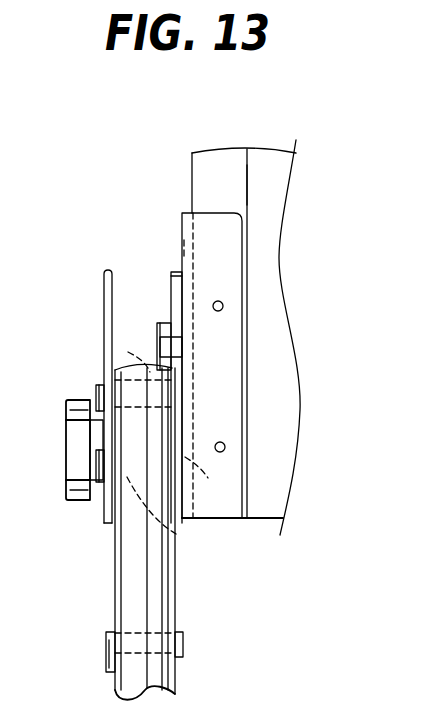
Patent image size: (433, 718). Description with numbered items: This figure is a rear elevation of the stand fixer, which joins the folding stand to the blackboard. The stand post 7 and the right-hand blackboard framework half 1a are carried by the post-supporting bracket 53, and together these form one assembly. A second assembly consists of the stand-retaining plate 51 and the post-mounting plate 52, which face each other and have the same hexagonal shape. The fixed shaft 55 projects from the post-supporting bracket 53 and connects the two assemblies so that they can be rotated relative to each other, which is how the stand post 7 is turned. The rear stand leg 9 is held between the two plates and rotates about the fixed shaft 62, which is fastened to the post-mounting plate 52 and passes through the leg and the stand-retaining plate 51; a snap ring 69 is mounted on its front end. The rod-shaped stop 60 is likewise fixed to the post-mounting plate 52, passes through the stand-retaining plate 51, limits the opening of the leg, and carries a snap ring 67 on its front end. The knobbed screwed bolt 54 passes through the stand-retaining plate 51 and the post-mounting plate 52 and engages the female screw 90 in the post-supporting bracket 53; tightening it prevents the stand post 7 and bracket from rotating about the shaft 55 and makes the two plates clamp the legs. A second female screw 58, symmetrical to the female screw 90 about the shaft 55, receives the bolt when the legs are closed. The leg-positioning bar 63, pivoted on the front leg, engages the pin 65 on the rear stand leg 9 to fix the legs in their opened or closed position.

The stand post 7 is at (220, 152).
The right-hand blackboard framework half 1a is at (262, 207).
The post-supporting bracket 53 is at (235, 356).
The female screw 58 is at (183, 240).
The stand-retaining plate 51 is at (103, 272).
The post-mounting plate 52 is at (172, 268).
The fixed shaft 55 is at (157, 336).
The rear stand leg 9 is at (160, 678).
The knobbed screwed bolt 54 is at (72, 456).
The snap ring 69 is at (97, 386).
The snap ring 67 is at (100, 488).
The fixed shaft 62 is at (128, 352).
The rod-shaped stop 60 is at (178, 535).
The female screw 90 is at (208, 478).
The leg-positioning bar 63 is at (107, 632).
The pin 65 is at (183, 660).